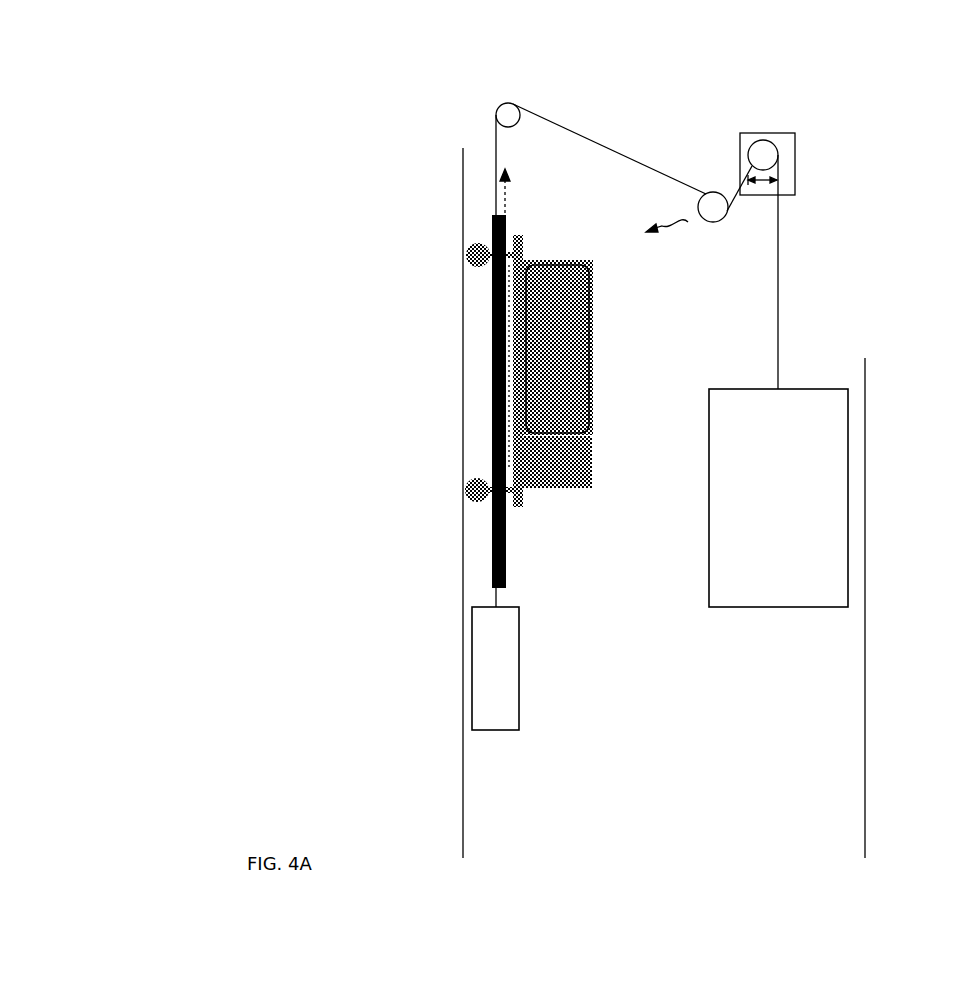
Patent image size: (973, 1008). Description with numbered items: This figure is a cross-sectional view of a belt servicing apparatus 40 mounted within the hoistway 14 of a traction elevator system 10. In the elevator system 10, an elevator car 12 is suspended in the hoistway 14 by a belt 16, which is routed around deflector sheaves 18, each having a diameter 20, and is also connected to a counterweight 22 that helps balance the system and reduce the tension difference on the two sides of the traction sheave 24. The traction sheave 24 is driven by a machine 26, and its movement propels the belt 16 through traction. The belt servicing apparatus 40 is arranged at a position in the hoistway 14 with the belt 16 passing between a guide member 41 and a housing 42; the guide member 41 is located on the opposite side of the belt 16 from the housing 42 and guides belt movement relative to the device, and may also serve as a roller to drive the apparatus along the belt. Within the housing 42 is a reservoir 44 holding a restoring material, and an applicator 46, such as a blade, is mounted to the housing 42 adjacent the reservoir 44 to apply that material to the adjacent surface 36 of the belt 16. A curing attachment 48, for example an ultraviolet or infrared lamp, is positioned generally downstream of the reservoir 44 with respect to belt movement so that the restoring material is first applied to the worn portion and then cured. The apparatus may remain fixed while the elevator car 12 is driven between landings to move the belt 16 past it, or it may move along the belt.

The elevator system 10 is at (880, 102).
The elevator car 12 is at (768, 508).
The hoistway 14 is at (895, 517).
The belt 16 is at (628, 172).
The deflector sheave 18 is at (500, 104).
The diameter 20 is at (764, 190).
The counterweight 22 is at (484, 678).
The traction sheave 24 is at (770, 141).
The machine 26 is at (755, 133).
The surface of the belt 36 is at (507, 555).
The belt servicing apparatus 40 is at (673, 214).
The guide member 41 is at (468, 250).
The housing 42 is at (595, 348).
The reservoir 44 is at (578, 488).
The applicator 46 is at (503, 445).
The curing attachment 48 is at (578, 382).